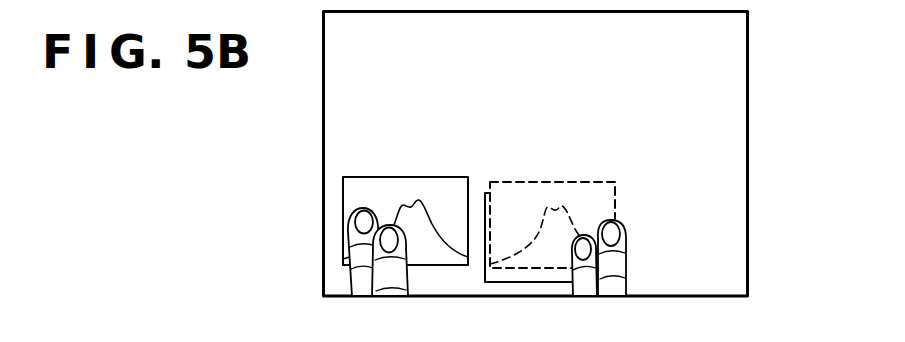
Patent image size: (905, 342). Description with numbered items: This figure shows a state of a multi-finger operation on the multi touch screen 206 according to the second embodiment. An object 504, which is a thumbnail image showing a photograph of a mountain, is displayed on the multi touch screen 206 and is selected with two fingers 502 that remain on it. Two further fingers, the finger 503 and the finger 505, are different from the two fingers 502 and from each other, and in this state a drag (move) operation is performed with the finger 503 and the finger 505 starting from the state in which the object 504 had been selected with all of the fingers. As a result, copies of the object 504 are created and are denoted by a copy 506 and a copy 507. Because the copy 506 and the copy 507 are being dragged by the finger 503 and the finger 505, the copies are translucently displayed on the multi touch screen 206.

The multi touch screen 206 is at (748, 61).
The two fingers 502 is at (383, 282).
The finger 503 is at (585, 283).
The object 504 is at (343, 190).
The finger 505 is at (616, 272).
The copy 506 is at (506, 284).
The copy 507 is at (617, 196).